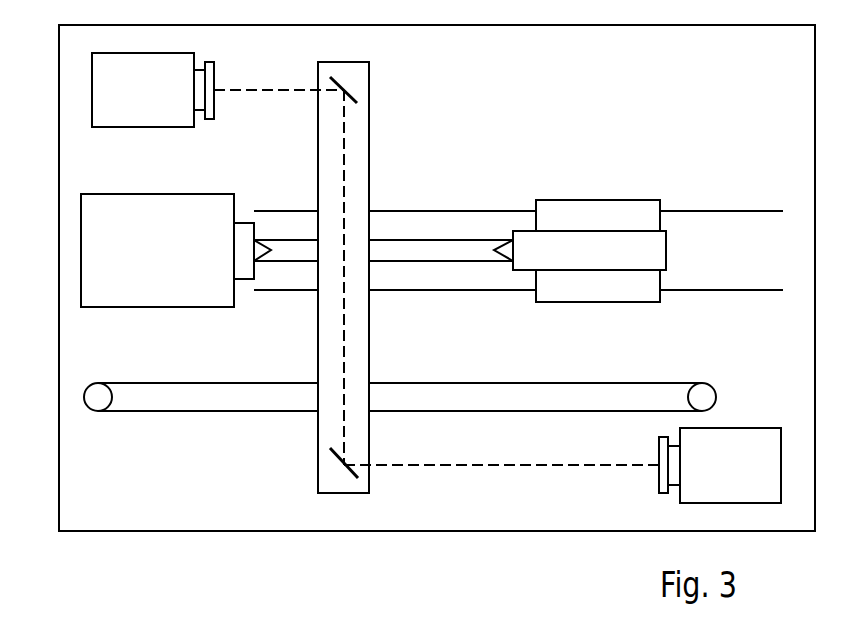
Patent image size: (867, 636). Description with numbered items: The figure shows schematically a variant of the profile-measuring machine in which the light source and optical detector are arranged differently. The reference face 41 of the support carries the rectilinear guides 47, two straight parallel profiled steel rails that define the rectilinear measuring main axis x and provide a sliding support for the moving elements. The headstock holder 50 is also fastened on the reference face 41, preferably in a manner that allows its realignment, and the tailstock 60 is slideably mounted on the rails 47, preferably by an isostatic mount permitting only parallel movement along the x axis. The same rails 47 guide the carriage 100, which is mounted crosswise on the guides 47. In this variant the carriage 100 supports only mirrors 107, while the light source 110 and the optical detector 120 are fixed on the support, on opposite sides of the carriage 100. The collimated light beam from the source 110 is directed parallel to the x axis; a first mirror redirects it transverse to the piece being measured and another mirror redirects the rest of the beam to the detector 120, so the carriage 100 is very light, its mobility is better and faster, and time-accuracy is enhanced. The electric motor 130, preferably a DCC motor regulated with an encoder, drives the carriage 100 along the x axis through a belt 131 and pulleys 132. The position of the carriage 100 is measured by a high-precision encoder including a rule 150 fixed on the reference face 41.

The reference face 41 is at (745, 96).
The light source 110 is at (147, 105).
The carriage 100 is at (358, 175).
The mirrors 107 is at (355, 94).
The headstock holder 50 is at (190, 223).
The rectilinear guides 47 is at (457, 210).
The rule 150 is at (424, 252).
The tailstock 60 is at (562, 248).
The belt 131 is at (508, 382).
The pulleys 132 is at (100, 397).
The electric motor 130 is at (703, 397).
The optical detector 120 is at (732, 453).